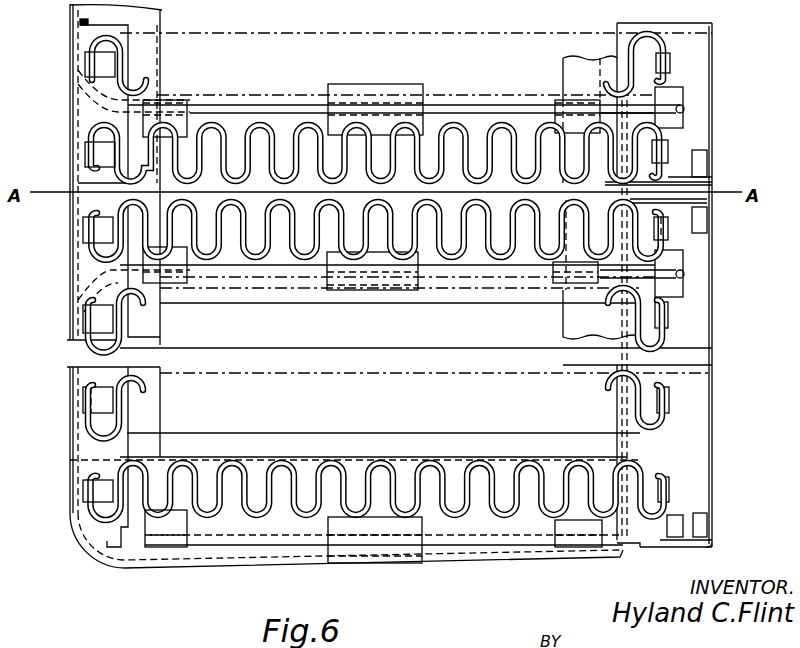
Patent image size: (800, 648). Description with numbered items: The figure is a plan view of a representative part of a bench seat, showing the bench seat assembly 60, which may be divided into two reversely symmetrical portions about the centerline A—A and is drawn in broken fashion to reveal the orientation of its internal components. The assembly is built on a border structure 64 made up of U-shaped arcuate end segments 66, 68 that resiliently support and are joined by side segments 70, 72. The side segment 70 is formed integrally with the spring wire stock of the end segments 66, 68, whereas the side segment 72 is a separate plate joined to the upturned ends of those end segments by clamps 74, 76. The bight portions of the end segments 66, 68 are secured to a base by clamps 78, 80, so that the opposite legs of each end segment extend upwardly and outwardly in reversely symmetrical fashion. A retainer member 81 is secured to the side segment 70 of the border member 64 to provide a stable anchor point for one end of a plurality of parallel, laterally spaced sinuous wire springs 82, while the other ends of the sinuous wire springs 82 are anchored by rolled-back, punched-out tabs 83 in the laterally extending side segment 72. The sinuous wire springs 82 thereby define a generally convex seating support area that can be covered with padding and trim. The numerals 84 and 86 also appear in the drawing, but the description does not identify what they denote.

The bench seat assembly 60 is at (66, 285).
The border structure 64 is at (130, 545).
The U-shaped arcuate end segment 66 is at (218, 543).
The U-shaped arcuate end segment 68 is at (262, 268).
The side segment 70 is at (77, 433).
The side segment 72 is at (700, 434).
The clamp 74 is at (700, 524).
The clamp 76 is at (685, 288).
The clamp 78 is at (358, 552).
The clamp 80 is at (376, 290).
The retainer member 81 is at (80, 378).
The sinuous wire spring 82 is at (120, 413).
The rolled-back punched-out tab 83 is at (668, 313).
The left end clamp 84 is at (150, 548).
The right end clamp 86 is at (555, 537).